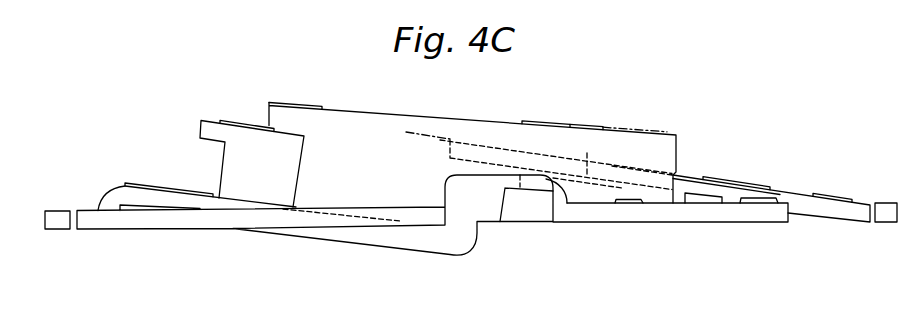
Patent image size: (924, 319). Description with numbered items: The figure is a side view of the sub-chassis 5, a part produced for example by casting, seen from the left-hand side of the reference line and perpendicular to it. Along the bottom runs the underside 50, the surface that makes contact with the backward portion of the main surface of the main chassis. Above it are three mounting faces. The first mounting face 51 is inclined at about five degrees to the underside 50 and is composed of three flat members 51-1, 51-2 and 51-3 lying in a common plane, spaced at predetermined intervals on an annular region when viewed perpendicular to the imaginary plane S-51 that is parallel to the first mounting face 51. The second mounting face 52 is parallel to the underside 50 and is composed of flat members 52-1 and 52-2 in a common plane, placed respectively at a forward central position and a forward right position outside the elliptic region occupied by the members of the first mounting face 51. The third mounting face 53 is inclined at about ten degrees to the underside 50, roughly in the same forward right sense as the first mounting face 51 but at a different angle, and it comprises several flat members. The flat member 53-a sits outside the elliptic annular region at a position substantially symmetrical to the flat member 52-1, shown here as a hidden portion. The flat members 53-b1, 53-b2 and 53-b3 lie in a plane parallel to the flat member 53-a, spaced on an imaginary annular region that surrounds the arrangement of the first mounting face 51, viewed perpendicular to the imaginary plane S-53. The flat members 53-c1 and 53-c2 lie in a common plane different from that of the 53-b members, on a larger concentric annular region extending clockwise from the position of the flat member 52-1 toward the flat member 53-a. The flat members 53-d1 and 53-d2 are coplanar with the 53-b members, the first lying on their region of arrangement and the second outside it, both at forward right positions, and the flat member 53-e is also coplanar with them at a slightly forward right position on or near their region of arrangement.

The sub-chassis 5 is at (476, 119).
The underside 50 is at (141, 229).
The first mounting face 51 is at (476, 119).
The flat member 51-1 is at (531, 121).
The flat member 51-2 is at (272, 102).
The flat member 51-3 is at (587, 123).
The imaginary plane S-51 is at (635, 127).
The second mounting face 52 is at (659, 196).
The flat member 52-1 is at (621, 198).
The flat member 52-2 is at (774, 197).
The third mounting face 53 is at (493, 153).
The flat member 53-a is at (637, 166).
The flat member 53-b1 is at (699, 190).
The flat member 53-b2 is at (223, 119).
The flat member 53-b3 is at (586, 158).
The flat member 53-c1 is at (244, 205).
The flat member 53-c2 is at (150, 183).
The flat member 53-d1 is at (752, 187).
The flat member 53-d2 is at (837, 194).
The flat member 53-e is at (684, 175).
The imaginary plane S-53 is at (423, 131).